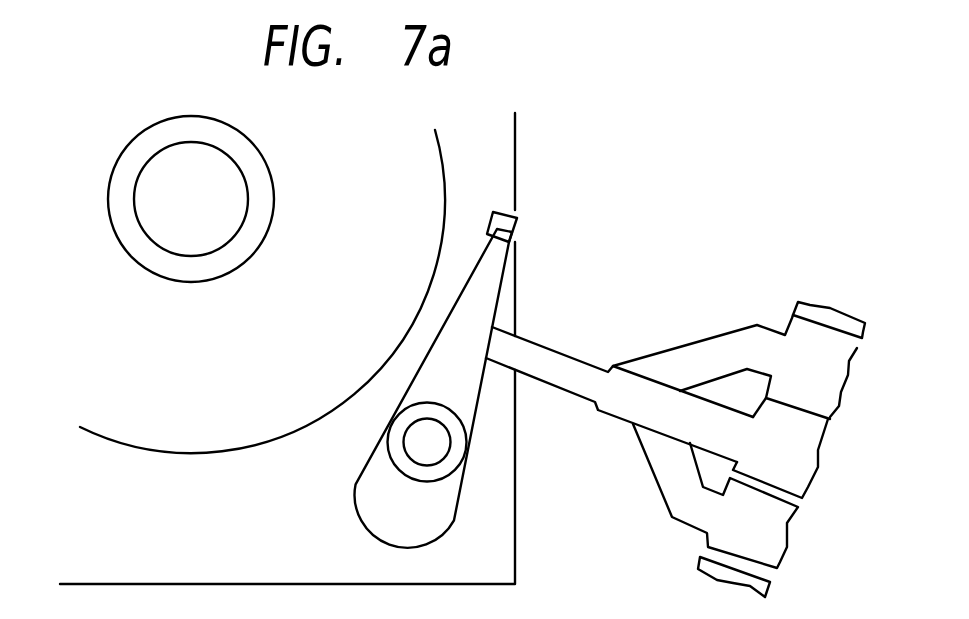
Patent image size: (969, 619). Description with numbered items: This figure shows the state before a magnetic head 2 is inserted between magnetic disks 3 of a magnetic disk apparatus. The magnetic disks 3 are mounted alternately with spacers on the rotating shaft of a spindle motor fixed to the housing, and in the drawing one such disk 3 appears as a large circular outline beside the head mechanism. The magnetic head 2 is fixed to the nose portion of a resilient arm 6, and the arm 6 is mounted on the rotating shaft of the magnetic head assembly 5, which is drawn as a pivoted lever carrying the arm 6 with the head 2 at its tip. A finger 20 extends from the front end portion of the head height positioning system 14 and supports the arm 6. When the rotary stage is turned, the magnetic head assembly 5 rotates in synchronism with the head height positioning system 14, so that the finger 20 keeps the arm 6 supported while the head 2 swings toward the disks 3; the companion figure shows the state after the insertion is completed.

The magnetic head 2 is at (518, 224).
The magnetic disk 3 is at (443, 158).
The magnetic head assembly 5 is at (476, 395).
The arm 6 is at (478, 307).
The head height positioning system 14 is at (802, 350).
The finger 20 is at (589, 383).